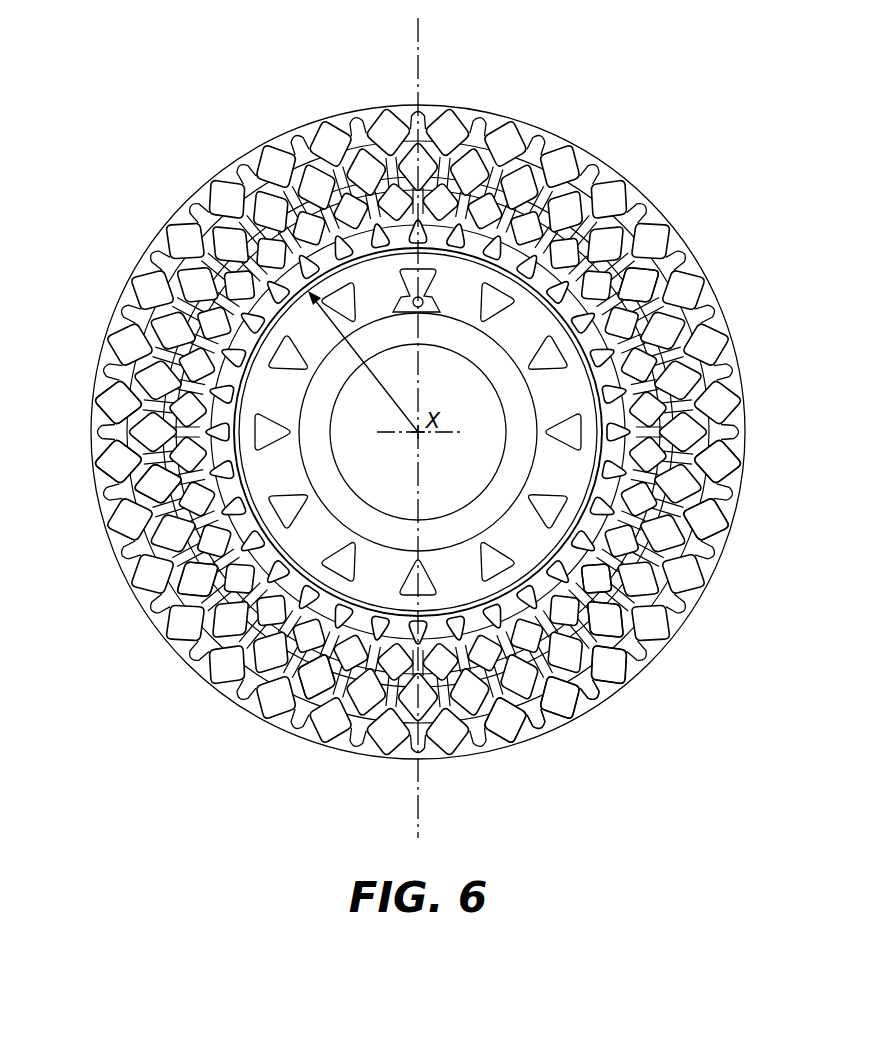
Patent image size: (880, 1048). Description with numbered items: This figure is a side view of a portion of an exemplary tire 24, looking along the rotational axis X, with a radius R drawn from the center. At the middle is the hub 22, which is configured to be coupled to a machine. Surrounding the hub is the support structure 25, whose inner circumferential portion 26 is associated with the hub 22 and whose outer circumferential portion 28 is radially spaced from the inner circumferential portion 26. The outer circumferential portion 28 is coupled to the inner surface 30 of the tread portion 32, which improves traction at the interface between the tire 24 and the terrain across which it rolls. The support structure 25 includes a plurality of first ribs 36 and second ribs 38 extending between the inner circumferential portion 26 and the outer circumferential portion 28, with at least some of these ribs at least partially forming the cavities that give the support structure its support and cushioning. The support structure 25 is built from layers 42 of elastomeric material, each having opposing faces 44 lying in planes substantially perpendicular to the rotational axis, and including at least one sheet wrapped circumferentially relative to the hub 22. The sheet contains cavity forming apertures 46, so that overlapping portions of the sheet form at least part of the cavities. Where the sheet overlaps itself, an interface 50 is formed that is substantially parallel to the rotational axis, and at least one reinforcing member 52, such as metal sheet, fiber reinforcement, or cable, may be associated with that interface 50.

The hub 22 is at (507, 373).
The tire 24 is at (727, 139).
The support structure 25 is at (645, 258).
The inner circumferential portion 26 is at (563, 330).
The outer circumferential portion 28 is at (539, 128).
The inner surface 30 is at (489, 90).
The tread portion 32 is at (612, 446).
The first ribs 36 is at (703, 502).
The second ribs 38 is at (707, 470).
The layers 42 is at (185, 599).
The opposing faces 44 is at (118, 437).
The cavity forming apertures 46 is at (605, 575).
The interface 50 is at (605, 693).
The reinforcing member 52 is at (600, 690).
The radius R is at (223, 175).